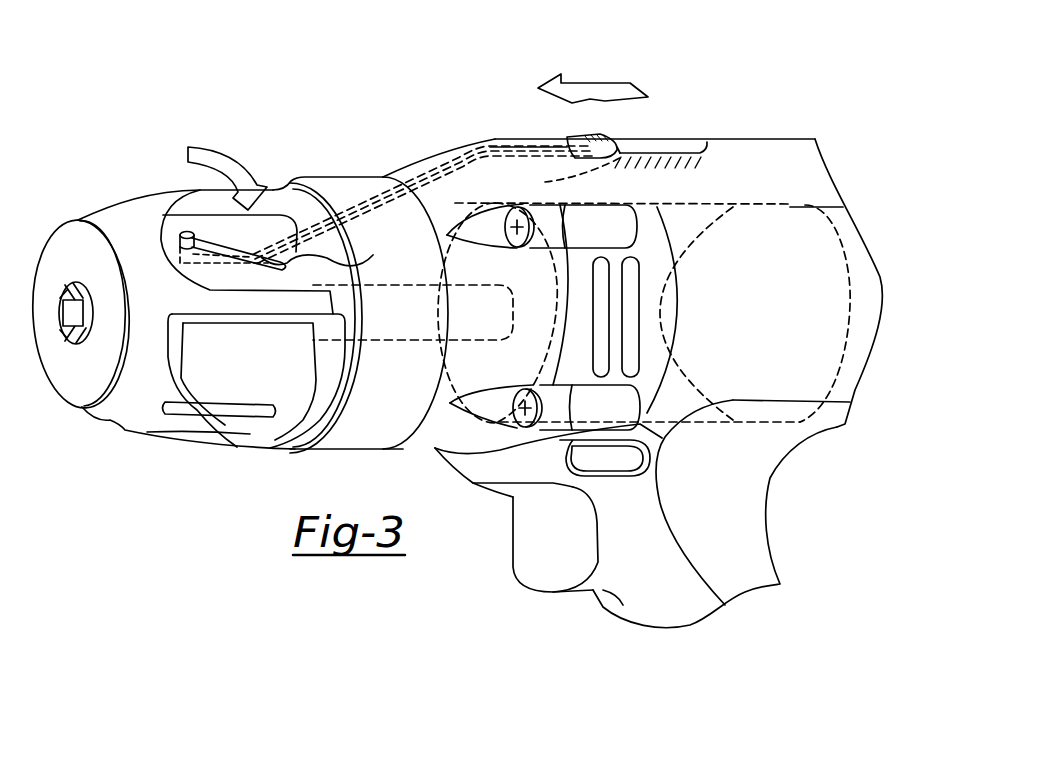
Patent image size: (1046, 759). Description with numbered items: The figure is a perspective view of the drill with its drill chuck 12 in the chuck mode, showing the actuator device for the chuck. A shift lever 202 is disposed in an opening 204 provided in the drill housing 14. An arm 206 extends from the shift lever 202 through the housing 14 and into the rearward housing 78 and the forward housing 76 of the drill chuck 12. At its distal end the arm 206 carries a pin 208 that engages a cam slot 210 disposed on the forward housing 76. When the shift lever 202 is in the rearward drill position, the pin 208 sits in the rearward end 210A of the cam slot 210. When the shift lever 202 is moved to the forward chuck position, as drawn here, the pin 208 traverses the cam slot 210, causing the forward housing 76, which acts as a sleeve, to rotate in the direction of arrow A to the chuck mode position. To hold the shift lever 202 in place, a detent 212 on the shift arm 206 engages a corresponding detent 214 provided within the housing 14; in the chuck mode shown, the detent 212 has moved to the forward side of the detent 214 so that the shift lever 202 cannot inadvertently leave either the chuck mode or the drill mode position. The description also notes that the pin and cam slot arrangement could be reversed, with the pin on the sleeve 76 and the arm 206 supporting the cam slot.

The drill chuck 12 is at (194, 115).
The drill housing 14 is at (815, 176).
The forward housing 76 is at (200, 427).
The rearward housing 78 is at (350, 441).
The shift lever 202 is at (587, 137).
The opening 204 is at (683, 142).
The arm 206 is at (421, 181).
The pin 208 is at (181, 234).
The cam slot 210 is at (207, 268).
The rearward end 210A is at (336, 248).
The detent 212 is at (545, 182).
The detent 214 is at (678, 163).